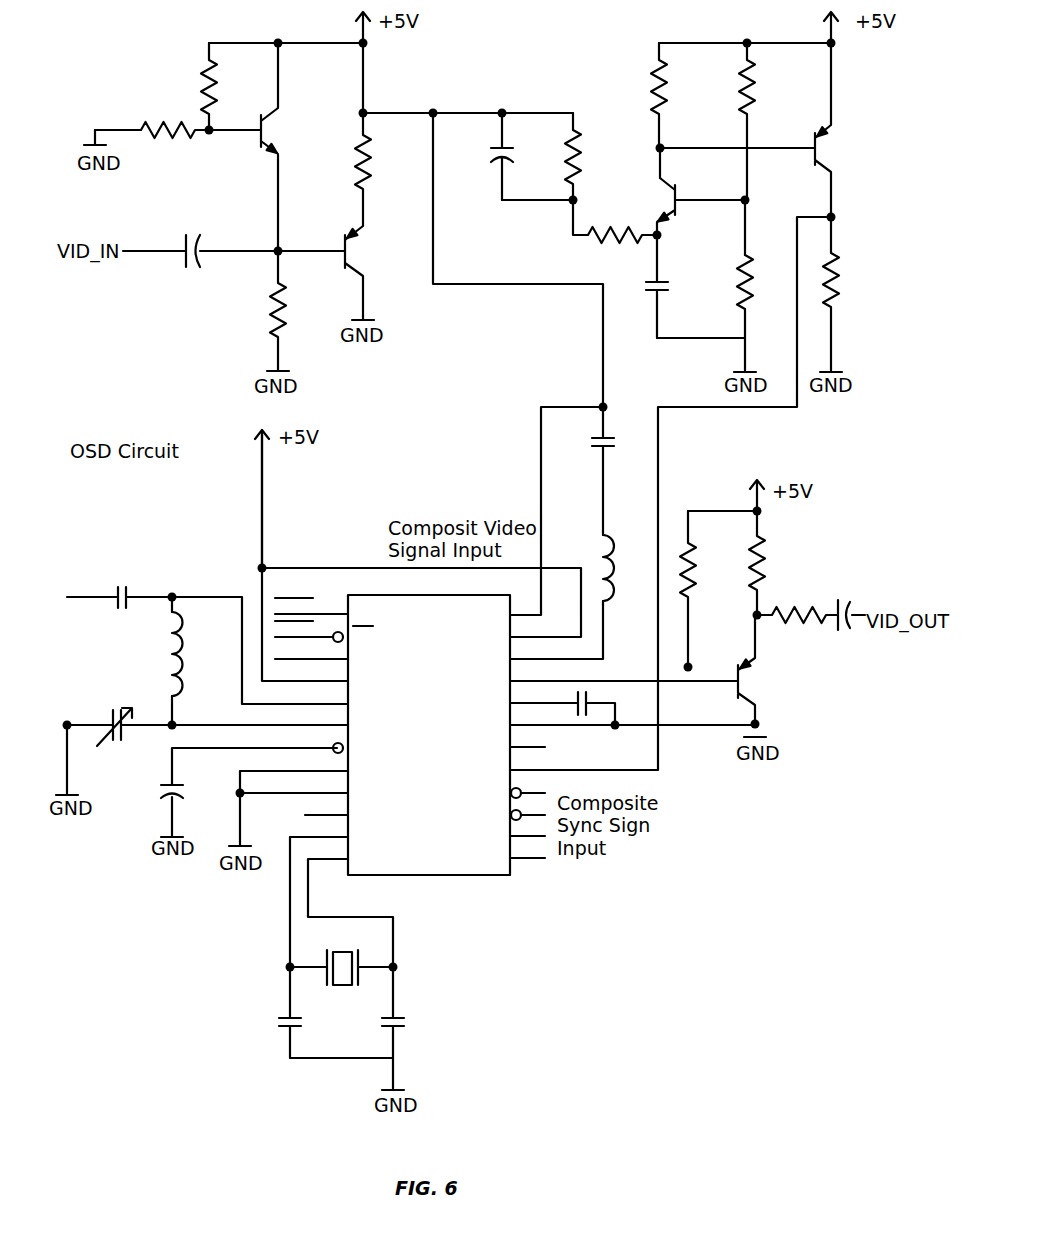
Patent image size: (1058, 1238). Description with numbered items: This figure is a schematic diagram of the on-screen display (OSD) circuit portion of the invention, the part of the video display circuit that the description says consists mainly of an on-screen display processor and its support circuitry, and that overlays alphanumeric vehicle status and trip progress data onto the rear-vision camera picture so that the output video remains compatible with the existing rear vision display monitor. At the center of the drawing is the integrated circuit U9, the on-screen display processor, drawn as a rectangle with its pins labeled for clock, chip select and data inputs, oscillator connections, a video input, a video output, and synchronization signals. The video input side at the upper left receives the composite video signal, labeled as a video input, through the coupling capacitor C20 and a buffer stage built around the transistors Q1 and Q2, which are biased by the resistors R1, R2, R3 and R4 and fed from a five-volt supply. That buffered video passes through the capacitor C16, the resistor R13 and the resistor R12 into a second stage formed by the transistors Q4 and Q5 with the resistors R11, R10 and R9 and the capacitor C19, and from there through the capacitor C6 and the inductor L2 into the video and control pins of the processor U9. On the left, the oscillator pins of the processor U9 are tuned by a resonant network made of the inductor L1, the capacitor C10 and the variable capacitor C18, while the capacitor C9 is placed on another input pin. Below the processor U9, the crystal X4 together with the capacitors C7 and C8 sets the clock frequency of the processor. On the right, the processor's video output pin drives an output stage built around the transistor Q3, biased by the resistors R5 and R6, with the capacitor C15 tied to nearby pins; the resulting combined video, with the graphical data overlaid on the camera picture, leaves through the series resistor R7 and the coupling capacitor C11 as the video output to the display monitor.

The resistor 5.1K R1 is at (220, 86).
The resistor 2.2K R2 is at (371, 158).
The resistor 1.2K R3 is at (152, 131).
The resistor 100K R4 is at (289, 311).
The resistor 4.7K R5 is at (699, 589).
The resistor 200 R6 is at (762, 563).
The resistor 75 R7 is at (797, 615).
The resistor 1K R9 is at (832, 294).
The resistor 100K R10 is at (749, 282).
The resistors 3.3K / 1K R11 is at (697, 121).
The resistor 510 R12 is at (615, 232).
The resistor 51K R13 is at (559, 156).
The capacitor 100pF C6 is at (585, 471).
The capacitor 22pF C7 is at (266, 1029).
The capacitor 30pF C8 is at (417, 1029).
The capacitor C9 is at (198, 794).
The capacitor 30pF C10 is at (122, 597).
The capacitor 47uF C11 is at (863, 599).
The capacitor 100pF C15 is at (583, 707).
The capacitor 47uF C16 is at (496, 156).
The variable capacitor 5-30pF C18 is at (115, 729).
The capacitor 100pF C19 is at (666, 286).
The capacitor 10uF C20 is at (194, 251).
The inductor 39uH L1 is at (202, 654).
The inductor 10uH L2 is at (611, 568).
The transistor 2N3904 Q1 is at (284, 100).
The transistor 2N3906 Q2 is at (392, 260).
The transistor 2N3906 Q3 is at (786, 669).
The transistor 2N3904 Q4 is at (662, 199).
The transistor 2N3906 Q5 is at (863, 130).
The crystal 14.31818 MHz X4 is at (341, 970).
The OSD chip UDP6464A U9 is at (405, 742).